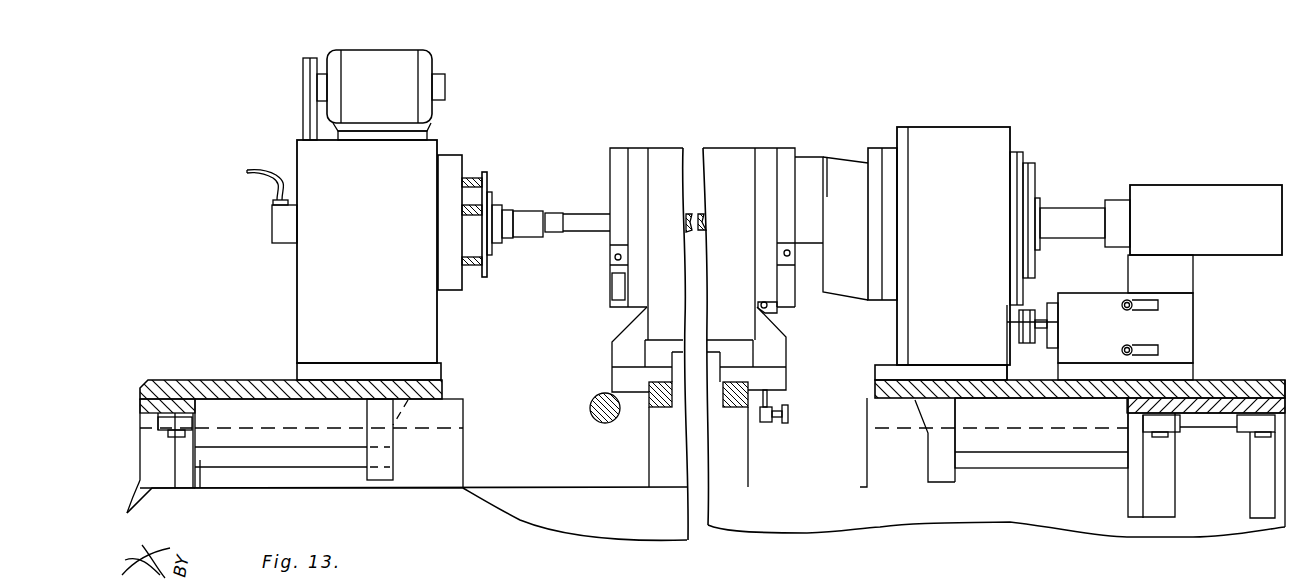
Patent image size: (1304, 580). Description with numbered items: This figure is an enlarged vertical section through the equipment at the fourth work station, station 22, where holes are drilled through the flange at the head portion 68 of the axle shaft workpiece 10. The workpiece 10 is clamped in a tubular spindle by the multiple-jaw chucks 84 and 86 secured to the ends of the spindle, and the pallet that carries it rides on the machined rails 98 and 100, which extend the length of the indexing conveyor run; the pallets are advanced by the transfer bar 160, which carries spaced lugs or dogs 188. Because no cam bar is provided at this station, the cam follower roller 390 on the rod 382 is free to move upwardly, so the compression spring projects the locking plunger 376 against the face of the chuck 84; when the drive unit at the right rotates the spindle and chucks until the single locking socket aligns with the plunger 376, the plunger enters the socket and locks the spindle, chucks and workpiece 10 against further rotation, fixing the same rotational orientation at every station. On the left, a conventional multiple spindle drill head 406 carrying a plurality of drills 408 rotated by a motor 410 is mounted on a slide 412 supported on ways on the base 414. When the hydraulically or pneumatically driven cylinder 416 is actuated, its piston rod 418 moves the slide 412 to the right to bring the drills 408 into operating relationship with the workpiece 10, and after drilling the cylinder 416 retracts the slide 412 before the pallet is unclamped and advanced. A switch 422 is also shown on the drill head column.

The axle shaft 10 is at (568, 201).
The station 22 is at (1088, 120).
The head portion 68 is at (561, 248).
The multiple-jaw chuck 84 is at (800, 162).
The multiple-jaw chuck 86 is at (610, 170).
The rail 98 is at (735, 407).
The rail 100 is at (652, 397).
The transfer bar 160 is at (598, 415).
The lug 188 is at (611, 392).
The locking plunger 376 is at (775, 310).
The rod 382 is at (770, 397).
The cam follower roller 390 is at (789, 423).
The multiple spindle drill head 406 is at (415, 324).
The drills 408 is at (463, 205).
The motor 410 is at (392, 81).
The slide 412 is at (437, 386).
The base 414 is at (285, 480).
The cylinder 416 is at (152, 489).
The piston rod 418 is at (220, 462).
The switch 422 is at (281, 226).